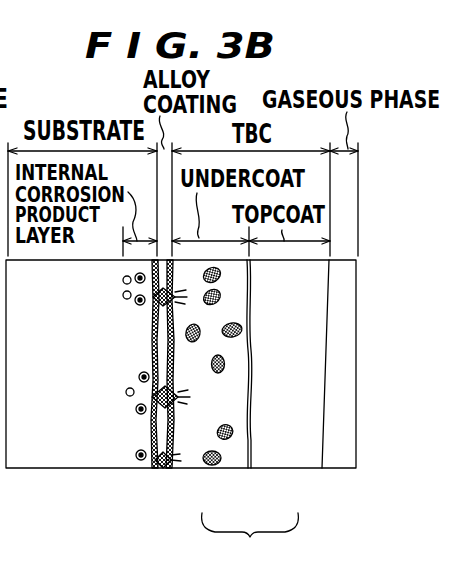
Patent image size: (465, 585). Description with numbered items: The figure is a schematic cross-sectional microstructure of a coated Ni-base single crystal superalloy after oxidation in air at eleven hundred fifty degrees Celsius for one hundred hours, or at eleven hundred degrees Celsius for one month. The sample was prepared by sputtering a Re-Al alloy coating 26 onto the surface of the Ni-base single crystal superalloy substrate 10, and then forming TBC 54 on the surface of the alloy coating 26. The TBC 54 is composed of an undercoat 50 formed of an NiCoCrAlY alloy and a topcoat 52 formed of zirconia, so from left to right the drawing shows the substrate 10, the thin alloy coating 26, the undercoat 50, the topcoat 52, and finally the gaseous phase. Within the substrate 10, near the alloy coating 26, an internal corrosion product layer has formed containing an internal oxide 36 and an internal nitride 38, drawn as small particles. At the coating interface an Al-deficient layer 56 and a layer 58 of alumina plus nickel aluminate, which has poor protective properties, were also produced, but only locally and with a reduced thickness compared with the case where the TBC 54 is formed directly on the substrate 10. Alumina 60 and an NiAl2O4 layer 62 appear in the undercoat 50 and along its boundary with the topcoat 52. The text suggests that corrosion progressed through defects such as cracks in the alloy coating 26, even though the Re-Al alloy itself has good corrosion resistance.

The substrate 10 is at (53, 458).
The Re-Al alloy coating 26 is at (156, 430).
The internal oxide 36 is at (137, 305).
The internal nitride 38 is at (122, 296).
The undercoat 50 is at (230, 465).
The topcoat 52 is at (287, 465).
The TBC 54 is at (250, 542).
The Al-deficient layer 56 is at (186, 397).
The layer of Al2O3+NiAl2O4 58 is at (136, 408).
The Al2O3 60 is at (246, 322).
The NiAl2O4 layer 62 is at (252, 356).